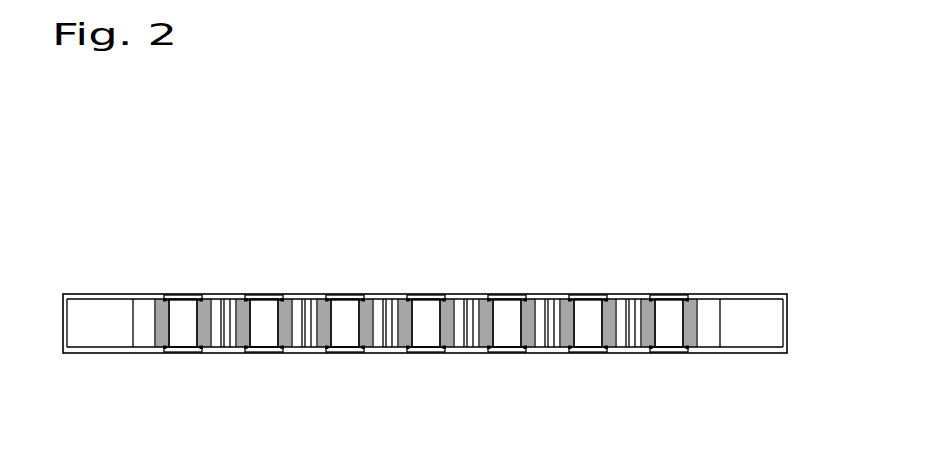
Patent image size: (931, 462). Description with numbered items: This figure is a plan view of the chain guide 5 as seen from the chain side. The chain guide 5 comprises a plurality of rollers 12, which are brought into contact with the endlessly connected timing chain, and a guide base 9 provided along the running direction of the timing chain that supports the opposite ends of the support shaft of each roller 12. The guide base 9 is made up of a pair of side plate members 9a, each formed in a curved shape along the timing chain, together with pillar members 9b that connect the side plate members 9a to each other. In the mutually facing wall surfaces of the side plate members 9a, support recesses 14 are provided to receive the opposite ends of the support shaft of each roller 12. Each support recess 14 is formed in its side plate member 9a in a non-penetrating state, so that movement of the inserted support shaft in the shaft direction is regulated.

The chain guide 5 is at (425, 305).
The guide base 9 is at (402, 327).
The side plate member 9a is at (293, 295).
The pillar member 9b is at (465, 315).
The roller 12 is at (512, 316).
The support recess 14 is at (423, 300).